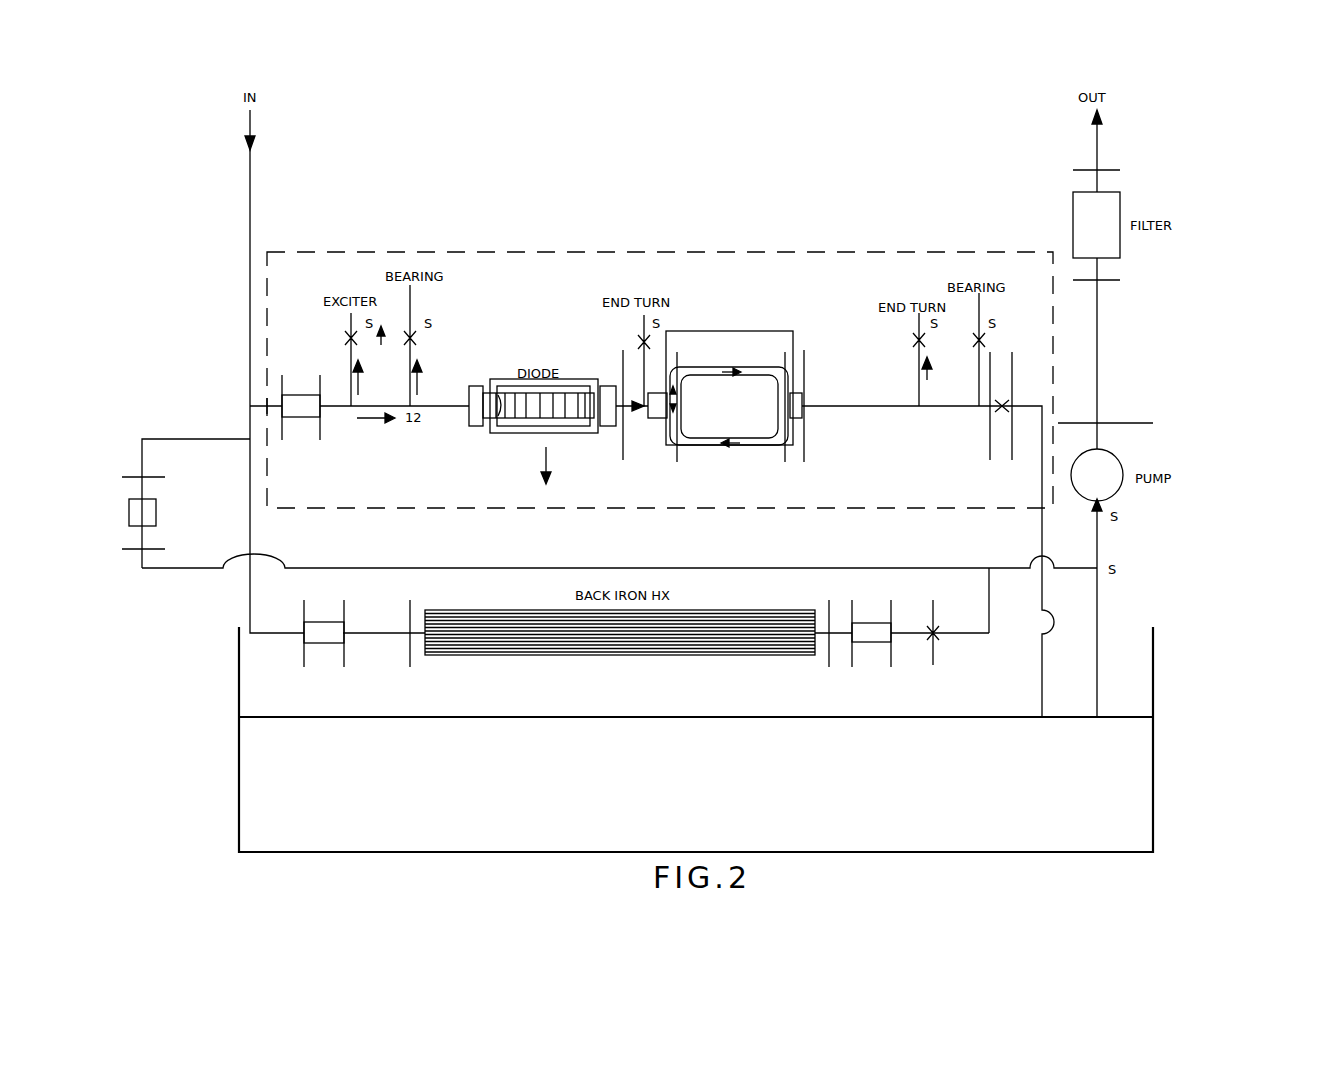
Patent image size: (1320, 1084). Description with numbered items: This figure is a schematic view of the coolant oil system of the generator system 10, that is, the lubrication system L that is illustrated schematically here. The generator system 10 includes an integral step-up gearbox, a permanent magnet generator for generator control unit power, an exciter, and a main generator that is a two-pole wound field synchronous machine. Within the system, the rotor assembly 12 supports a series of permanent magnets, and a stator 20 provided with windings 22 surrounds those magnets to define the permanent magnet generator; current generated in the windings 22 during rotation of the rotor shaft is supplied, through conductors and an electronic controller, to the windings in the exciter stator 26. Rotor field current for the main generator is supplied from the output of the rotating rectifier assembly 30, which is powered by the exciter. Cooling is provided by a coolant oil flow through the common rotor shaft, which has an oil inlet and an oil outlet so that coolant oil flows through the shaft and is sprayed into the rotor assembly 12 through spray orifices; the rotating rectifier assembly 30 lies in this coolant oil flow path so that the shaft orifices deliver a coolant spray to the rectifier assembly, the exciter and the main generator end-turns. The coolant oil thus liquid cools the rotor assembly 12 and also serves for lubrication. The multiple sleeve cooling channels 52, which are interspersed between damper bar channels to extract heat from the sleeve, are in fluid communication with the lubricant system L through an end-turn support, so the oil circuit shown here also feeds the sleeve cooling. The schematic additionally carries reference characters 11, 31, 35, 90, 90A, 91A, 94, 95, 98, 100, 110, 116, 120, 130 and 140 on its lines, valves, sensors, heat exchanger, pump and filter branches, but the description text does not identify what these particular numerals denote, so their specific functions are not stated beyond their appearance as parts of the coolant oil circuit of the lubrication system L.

The generator system 10 is at (229, 487).
The fluid return lines 11 is at (890, 635).
The rotor assembly 12 is at (668, 248).
The stator 20 is at (623, 414).
The windings 22 is at (676, 423).
The exciter stator 26 is at (784, 423).
The rotating rectifier assembly 30 is at (804, 416).
The bearing location 31 is at (990, 417).
The valve 35 is at (1008, 417).
The sleeve cooling channels 52 is at (800, 330).
The inlet line 90 is at (246, 406).
The inlet temperature transmitter 90A is at (289, 429).
The inlet line section 91A is at (269, 399).
The inlet line to exciter 94 is at (318, 399).
The return line 95 is at (303, 626).
The return line temperature transmitter 98 is at (326, 626).
The back iron heat exchanger inlet 100 is at (412, 625).
The back iron heat exchanger outlet 110 is at (843, 625).
The scavenge return line 116 is at (992, 591).
The pump outlet line 120 is at (1124, 424).
The filter inlet 130 is at (1111, 282).
The filter outlet 140 is at (1111, 172).
The lubrication system L is at (1188, 325).